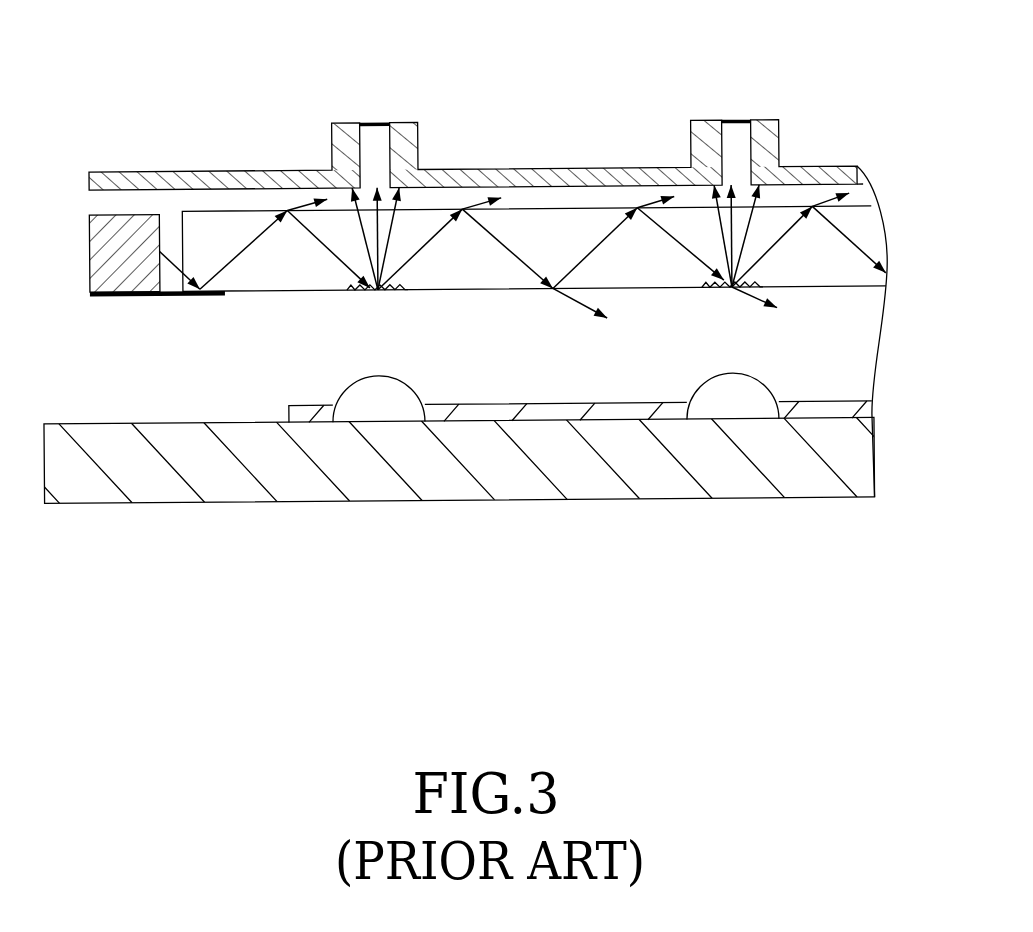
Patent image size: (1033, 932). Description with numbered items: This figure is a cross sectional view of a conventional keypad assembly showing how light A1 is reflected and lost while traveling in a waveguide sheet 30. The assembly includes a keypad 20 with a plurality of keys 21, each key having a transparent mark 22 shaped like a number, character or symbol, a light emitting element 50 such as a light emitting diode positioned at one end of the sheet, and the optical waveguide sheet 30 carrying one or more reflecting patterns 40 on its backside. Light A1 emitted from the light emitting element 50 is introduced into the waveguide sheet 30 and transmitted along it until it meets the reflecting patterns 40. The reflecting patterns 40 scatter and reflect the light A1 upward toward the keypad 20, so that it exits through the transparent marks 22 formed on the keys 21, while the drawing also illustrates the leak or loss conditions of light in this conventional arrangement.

The keypad 20 is at (475, 101).
The key 21 is at (702, 125).
The transparent mark 22 is at (742, 125).
The waveguide sheet 30 is at (533, 200).
The reflecting pattern 40 is at (350, 294).
The light emitting element 50 is at (128, 297).
The light A1 is at (523, 262).